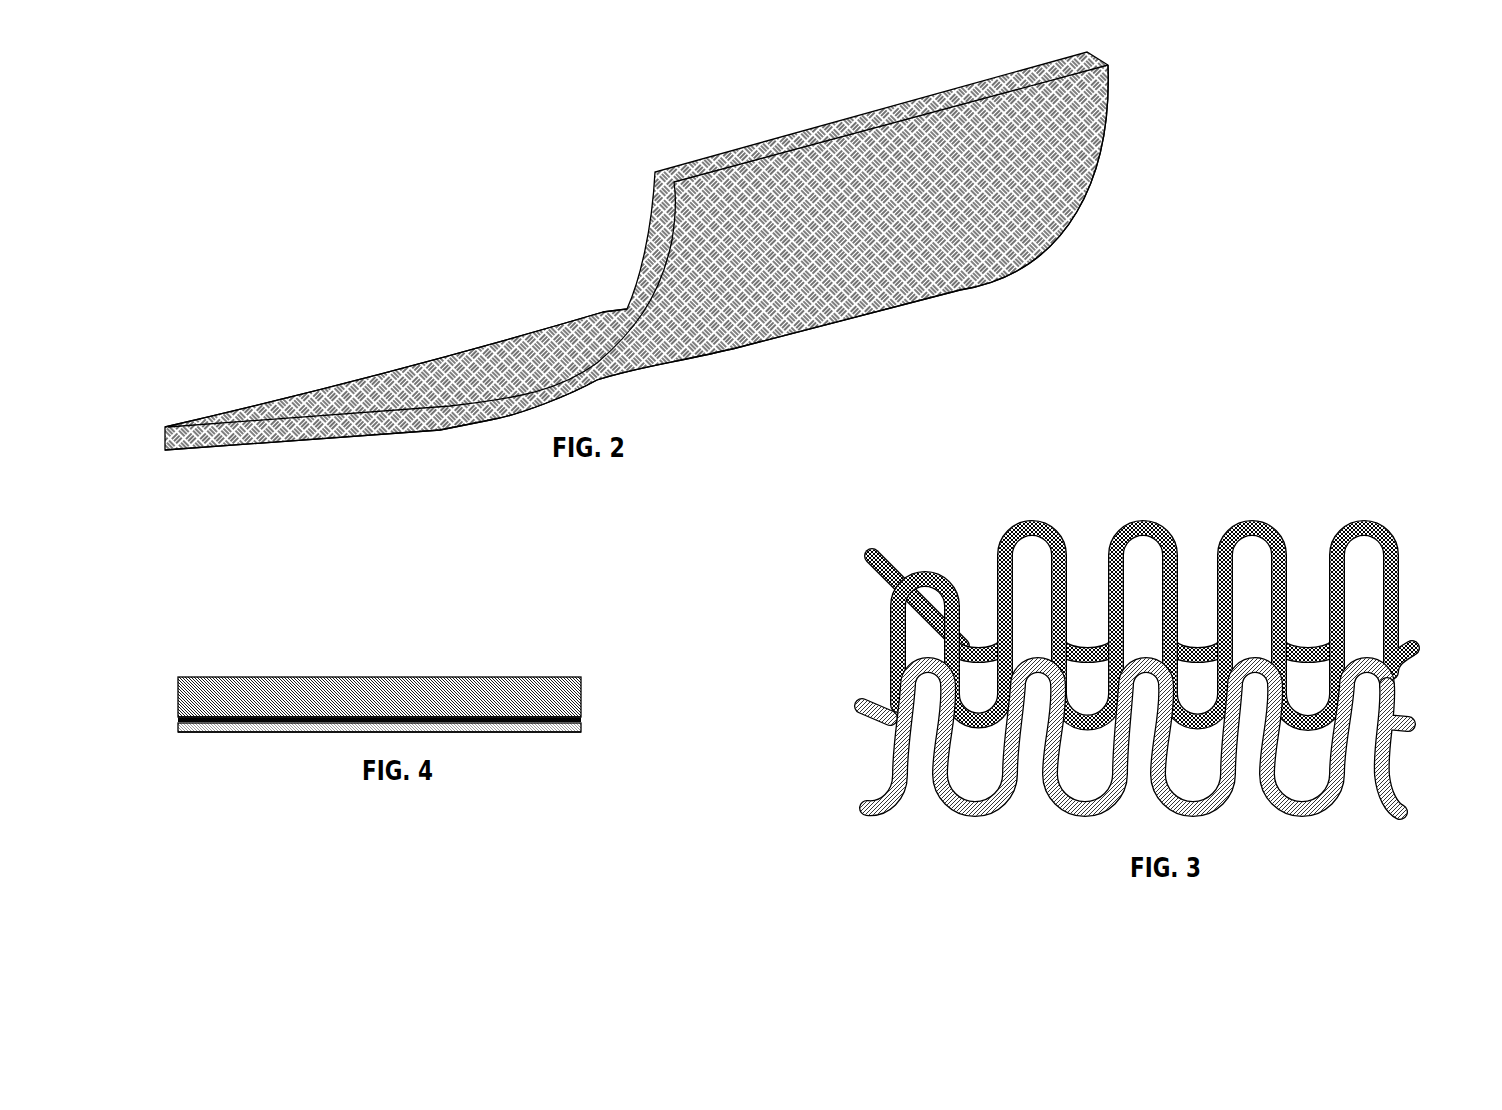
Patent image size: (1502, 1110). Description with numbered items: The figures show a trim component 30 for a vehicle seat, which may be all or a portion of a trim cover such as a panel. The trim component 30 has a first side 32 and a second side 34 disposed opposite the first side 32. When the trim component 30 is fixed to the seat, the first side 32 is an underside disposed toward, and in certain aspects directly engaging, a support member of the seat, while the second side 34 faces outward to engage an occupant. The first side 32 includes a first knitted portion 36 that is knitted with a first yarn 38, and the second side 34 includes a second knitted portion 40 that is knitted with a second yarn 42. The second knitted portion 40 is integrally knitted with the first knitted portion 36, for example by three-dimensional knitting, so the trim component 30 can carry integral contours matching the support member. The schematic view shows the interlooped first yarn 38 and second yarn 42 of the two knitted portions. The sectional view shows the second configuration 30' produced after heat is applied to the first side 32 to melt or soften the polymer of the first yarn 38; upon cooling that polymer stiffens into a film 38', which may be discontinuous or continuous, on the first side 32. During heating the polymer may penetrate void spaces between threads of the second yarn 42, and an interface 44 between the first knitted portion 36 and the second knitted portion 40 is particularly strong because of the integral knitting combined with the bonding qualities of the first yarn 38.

In FIG. 2, the trim component 30 is at (668, 251).
In FIG. 4, the second configuration of the trim component 30' is at (395, 710).
In FIG. 2, the first side 32 is at (973, 237).
In FIG. 4, the first side 32 is at (357, 677).
In FIG. 2, the second side 34 is at (428, 387).
In FIG. 4, the second side 34 is at (238, 737).
In FIG. 2, the first knitted portion 36 is at (503, 353).
In FIG. 3, the first knitted portion 36 is at (875, 740).
In FIG. 2, the first yarn 38 is at (421, 304).
In FIG. 3, the first yarn 38 is at (1423, 748).
In FIG. 4, the film 38' is at (435, 709).
In FIG. 2, the second knitted portion 40 is at (1060, 168).
In FIG. 3, the second knitted portion 40 is at (1122, 634).
In FIG. 4, the second knitted portion 40 is at (563, 712).
In FIG. 2, the second yarn 42 is at (850, 277).
In FIG. 3, the second yarn 42 is at (1363, 528).
In FIG. 4, the interface 44 is at (470, 720).